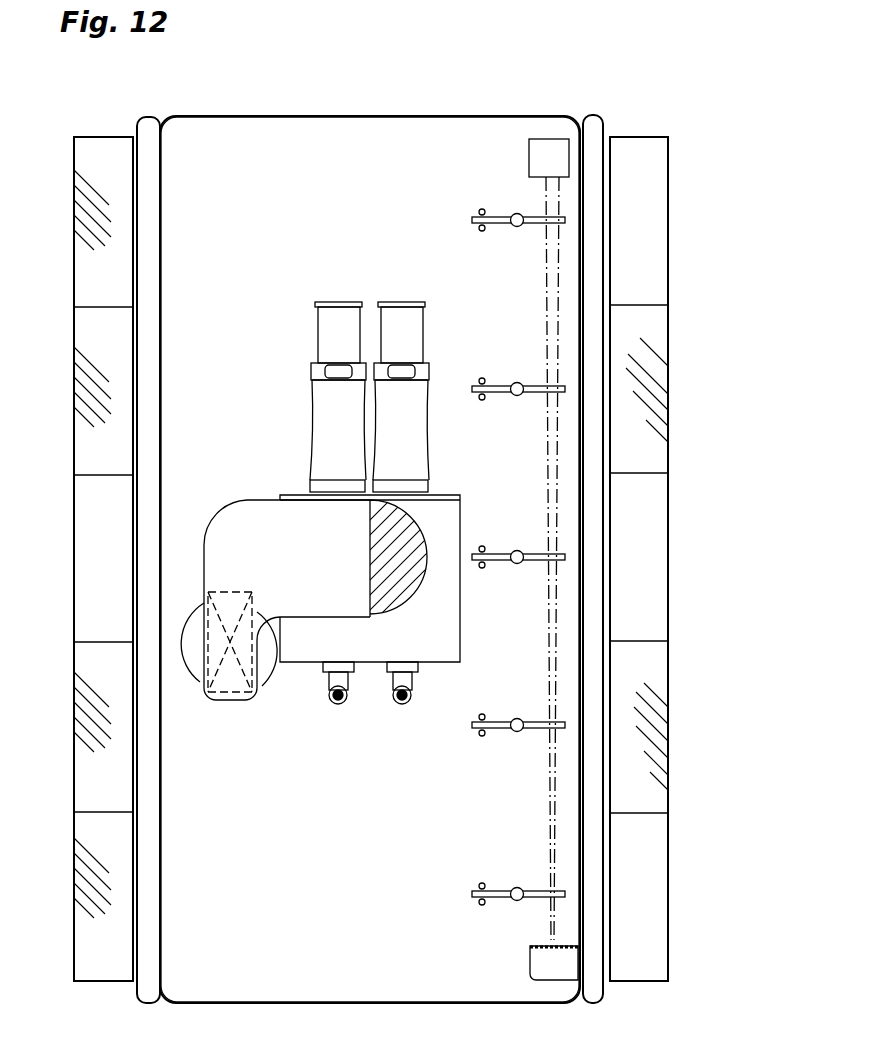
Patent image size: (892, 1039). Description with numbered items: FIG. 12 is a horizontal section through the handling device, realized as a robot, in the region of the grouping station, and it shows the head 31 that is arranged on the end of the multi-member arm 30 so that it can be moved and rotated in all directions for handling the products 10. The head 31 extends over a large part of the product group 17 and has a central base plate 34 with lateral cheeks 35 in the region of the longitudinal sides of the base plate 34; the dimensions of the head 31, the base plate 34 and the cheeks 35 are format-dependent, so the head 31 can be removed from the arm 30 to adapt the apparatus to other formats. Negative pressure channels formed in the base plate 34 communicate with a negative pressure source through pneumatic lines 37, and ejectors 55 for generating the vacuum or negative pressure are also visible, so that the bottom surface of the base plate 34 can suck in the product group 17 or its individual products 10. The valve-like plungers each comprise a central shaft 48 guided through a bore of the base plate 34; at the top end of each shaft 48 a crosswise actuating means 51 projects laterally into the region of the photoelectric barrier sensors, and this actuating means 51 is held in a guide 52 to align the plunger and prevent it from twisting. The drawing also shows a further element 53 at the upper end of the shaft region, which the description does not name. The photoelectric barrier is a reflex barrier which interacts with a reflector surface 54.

The product 10 is at (648, 390).
The product group 17 is at (641, 132).
The arm 30 is at (388, 565).
The head 31 is at (379, 113).
The central base plate 34 is at (253, 170).
The lateral cheek 35 is at (150, 245).
The pneumatic line 37 is at (402, 705).
The central shaft 48 is at (513, 214).
The crosswise actuating means 51 is at (540, 386).
The guide 52 is at (479, 228).
The motor 53 is at (551, 152).
The reflector surface 54 is at (553, 963).
The ejector 55 is at (412, 320).